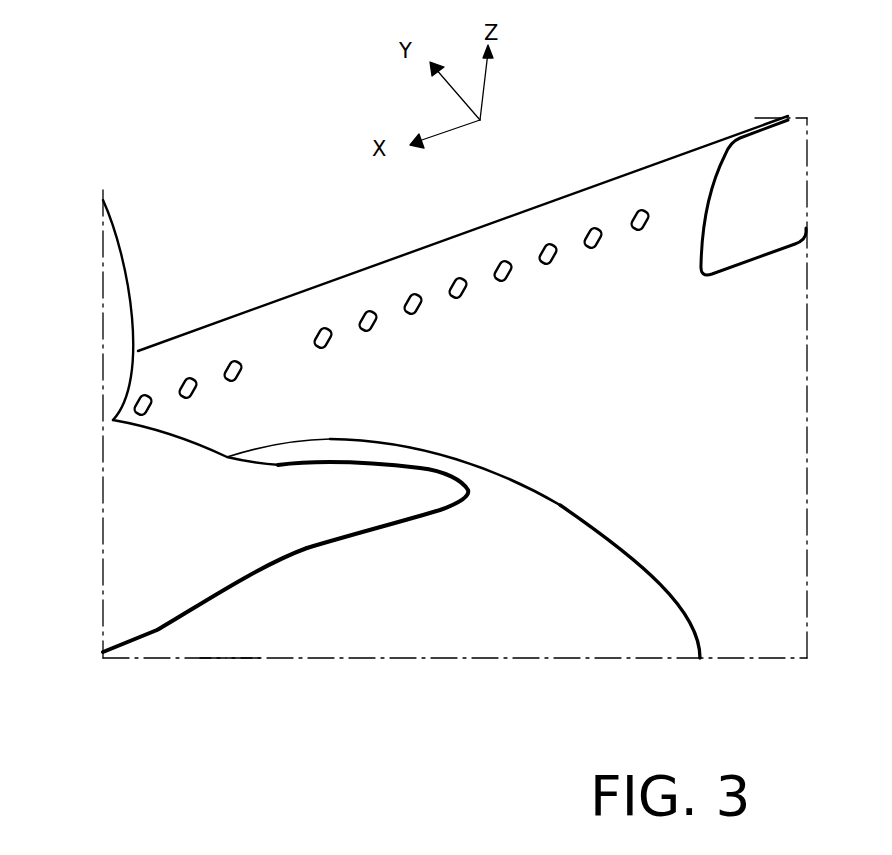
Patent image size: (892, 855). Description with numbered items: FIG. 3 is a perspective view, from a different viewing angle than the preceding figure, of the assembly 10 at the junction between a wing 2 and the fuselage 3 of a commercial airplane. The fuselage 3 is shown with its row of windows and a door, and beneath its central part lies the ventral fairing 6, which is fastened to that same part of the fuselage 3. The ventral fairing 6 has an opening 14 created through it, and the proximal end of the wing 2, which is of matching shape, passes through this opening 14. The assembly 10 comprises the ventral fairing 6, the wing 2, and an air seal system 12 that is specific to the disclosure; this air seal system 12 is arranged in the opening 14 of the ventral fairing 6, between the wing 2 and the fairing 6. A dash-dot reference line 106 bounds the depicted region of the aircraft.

The wing 2 is at (120, 493).
The fuselage 3 is at (745, 637).
The ventral fairing 6 is at (463, 627).
The assembly 10 is at (343, 550).
The air seal system 12 is at (158, 630).
The opening 14 is at (370, 474).
The reference plane 106 is at (229, 668).